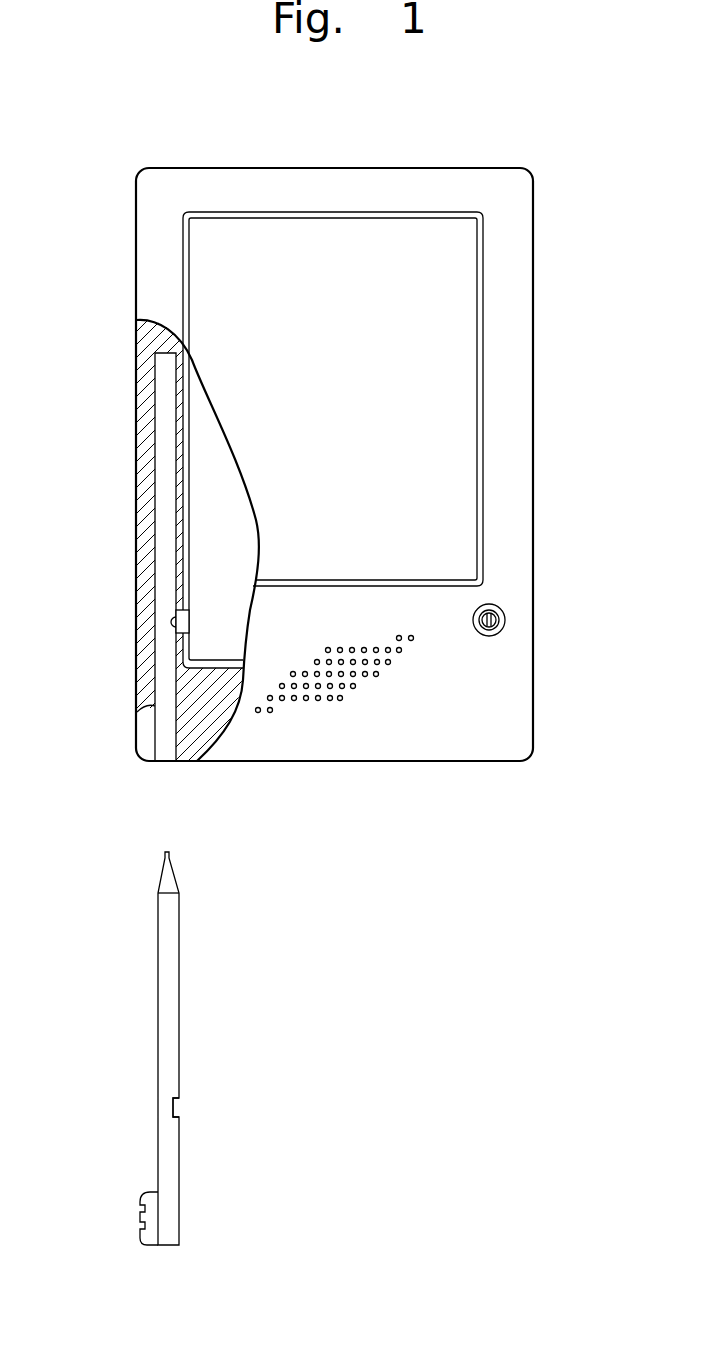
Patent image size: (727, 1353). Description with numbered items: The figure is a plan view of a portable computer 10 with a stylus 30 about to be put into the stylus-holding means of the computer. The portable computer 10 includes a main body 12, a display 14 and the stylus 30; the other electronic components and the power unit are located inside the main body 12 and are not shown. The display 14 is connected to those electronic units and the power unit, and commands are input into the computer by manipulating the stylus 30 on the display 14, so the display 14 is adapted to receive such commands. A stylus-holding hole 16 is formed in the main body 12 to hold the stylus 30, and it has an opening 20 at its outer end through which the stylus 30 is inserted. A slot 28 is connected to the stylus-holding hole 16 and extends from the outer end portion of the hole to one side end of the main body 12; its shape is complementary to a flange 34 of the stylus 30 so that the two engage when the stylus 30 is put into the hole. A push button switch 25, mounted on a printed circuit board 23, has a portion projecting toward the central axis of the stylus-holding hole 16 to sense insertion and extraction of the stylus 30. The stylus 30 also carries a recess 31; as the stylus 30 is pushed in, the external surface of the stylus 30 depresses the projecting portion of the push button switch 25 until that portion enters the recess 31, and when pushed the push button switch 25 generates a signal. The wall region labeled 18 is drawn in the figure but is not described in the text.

The portable computer 10 is at (100, 111).
The main body 12 is at (439, 747).
The display 14 is at (462, 382).
The stylus-holding hole 16 is at (165, 447).
The side wall 18 is at (150, 497).
The opening 20 is at (164, 762).
The printed circuit board 23 is at (213, 556).
The push button switch 25 is at (171, 622).
The slot 28 is at (147, 745).
The stylus 30 is at (173, 1052).
The recess 31 is at (178, 1108).
The flange 34 is at (150, 1212).